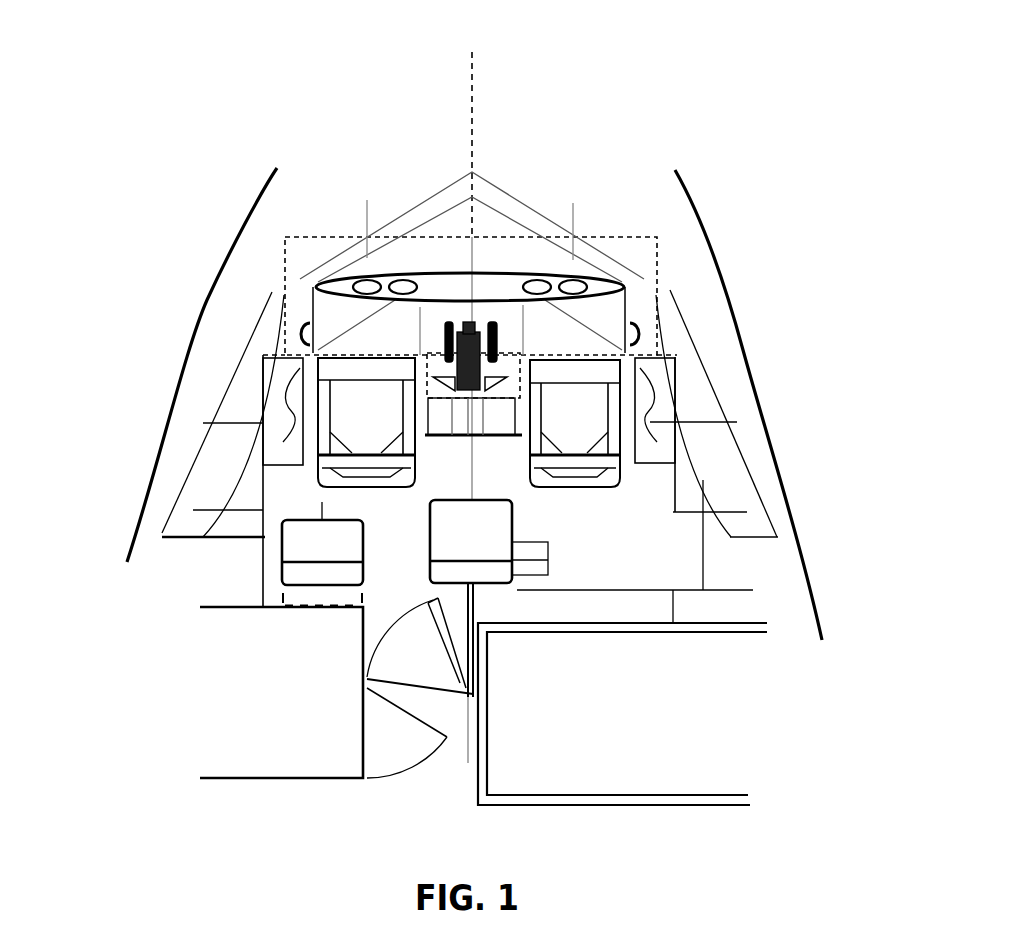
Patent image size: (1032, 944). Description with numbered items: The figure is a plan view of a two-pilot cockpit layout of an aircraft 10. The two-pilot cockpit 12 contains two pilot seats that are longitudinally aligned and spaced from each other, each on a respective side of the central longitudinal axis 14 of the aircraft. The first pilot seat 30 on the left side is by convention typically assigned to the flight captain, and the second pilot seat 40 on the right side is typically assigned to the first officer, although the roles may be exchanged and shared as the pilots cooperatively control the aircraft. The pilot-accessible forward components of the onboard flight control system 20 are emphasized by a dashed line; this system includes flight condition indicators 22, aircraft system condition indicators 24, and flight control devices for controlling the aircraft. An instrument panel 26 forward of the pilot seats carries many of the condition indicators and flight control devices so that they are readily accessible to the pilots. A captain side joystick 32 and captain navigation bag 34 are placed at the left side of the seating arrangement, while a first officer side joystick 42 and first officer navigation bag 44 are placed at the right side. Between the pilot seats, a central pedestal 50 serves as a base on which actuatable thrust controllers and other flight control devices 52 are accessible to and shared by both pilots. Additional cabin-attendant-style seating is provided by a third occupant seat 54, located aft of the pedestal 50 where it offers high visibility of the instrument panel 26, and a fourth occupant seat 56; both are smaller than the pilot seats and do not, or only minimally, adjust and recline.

The aircraft 10 is at (665, 93).
The two-pilot cockpit 12 is at (663, 550).
The central longitudinal axis 14 is at (472, 72).
The onboard flight control system 20 is at (588, 236).
The flight condition indicators 22 is at (360, 277).
The aircraft system condition indicators 24 is at (403, 277).
The instrument panel 26 is at (340, 280).
The first pilot seat 30 is at (376, 423).
The captain side joystick 32 is at (303, 327).
The captain navigation bag 34 is at (280, 397).
The second pilot seat 40 is at (588, 419).
The first officer side joystick 42 is at (632, 330).
The first officer navigation bag 44 is at (648, 396).
The central pedestal 50 is at (459, 322).
The flight control devices 52 is at (476, 322).
The third occupant seat 54 is at (513, 505).
The fourth occupant seat 56 is at (281, 522).